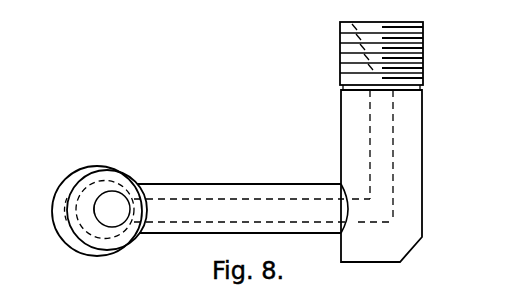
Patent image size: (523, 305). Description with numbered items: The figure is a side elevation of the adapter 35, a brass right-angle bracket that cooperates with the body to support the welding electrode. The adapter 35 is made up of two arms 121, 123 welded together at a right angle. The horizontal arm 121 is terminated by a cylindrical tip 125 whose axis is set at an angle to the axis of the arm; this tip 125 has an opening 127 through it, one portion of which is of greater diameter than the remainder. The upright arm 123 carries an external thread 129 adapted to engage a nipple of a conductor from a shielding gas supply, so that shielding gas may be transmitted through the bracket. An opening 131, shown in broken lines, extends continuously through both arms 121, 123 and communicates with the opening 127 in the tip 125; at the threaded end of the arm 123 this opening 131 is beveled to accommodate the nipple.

The adapter 35 is at (455, 227).
The arm 121 is at (278, 234).
The arm 123 is at (420, 107).
The cylindrical tip 125 is at (73, 178).
The opening 127 is at (100, 180).
The external thread 129 is at (425, 33).
The opening 131 is at (297, 199).